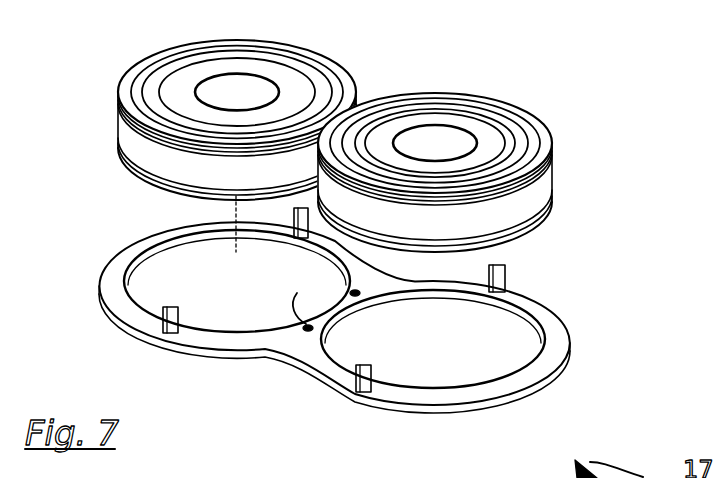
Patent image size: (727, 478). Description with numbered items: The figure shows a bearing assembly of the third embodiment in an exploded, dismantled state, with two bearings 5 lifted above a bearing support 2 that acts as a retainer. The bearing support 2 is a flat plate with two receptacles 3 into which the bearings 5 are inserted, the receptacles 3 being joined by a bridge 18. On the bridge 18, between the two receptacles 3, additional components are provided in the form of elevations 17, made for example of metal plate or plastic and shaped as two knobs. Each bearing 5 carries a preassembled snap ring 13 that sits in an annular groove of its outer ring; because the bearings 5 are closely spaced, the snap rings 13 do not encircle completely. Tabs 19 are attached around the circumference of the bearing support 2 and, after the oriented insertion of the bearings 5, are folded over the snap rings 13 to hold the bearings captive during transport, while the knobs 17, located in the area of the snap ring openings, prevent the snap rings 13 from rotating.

The bearing support 2 is at (558, 348).
The receptacles 3 is at (181, 288).
The bearings 5 is at (143, 138).
The snap rings 13 is at (345, 72).
The elevations 17 is at (349, 292).
The bridge 18 is at (326, 318).
The tabs 19 is at (506, 272).